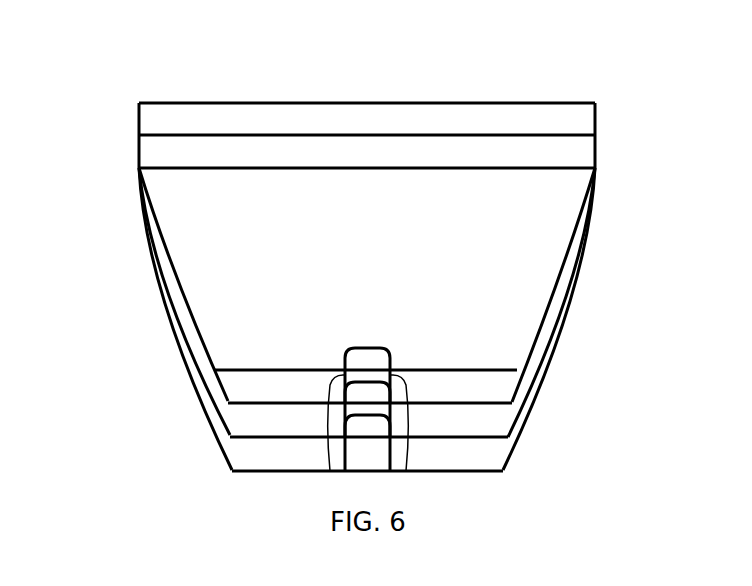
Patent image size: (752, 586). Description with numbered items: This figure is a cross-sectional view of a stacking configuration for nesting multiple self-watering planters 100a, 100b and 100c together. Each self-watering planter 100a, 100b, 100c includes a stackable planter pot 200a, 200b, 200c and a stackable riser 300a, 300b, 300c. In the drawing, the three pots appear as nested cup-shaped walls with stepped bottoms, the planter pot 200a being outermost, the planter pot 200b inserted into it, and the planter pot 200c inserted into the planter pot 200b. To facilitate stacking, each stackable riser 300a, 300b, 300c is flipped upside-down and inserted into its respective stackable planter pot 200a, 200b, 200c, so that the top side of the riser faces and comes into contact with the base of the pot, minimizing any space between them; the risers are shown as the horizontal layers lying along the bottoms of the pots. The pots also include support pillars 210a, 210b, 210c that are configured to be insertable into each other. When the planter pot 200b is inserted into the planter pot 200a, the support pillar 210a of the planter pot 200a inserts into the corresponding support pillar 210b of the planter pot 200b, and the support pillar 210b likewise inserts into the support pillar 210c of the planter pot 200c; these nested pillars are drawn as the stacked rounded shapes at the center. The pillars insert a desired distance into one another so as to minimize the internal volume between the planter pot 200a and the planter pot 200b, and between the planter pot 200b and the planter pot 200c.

The self-watering planter 100a is at (145, 259).
The self-watering planter 100b is at (137, 157).
The self-watering planter 100c is at (227, 100).
The stackable planter pot 200a is at (598, 218).
The stackable planter pot 200b is at (598, 159).
The stackable planter pot 200c is at (598, 123).
The support pillar 210a is at (356, 459).
The support pillar 210b is at (356, 396).
The support pillar 210c is at (356, 358).
The stackable riser 300a is at (499, 450).
The stackable riser 300b is at (499, 415).
The stackable riser 300c is at (499, 380).